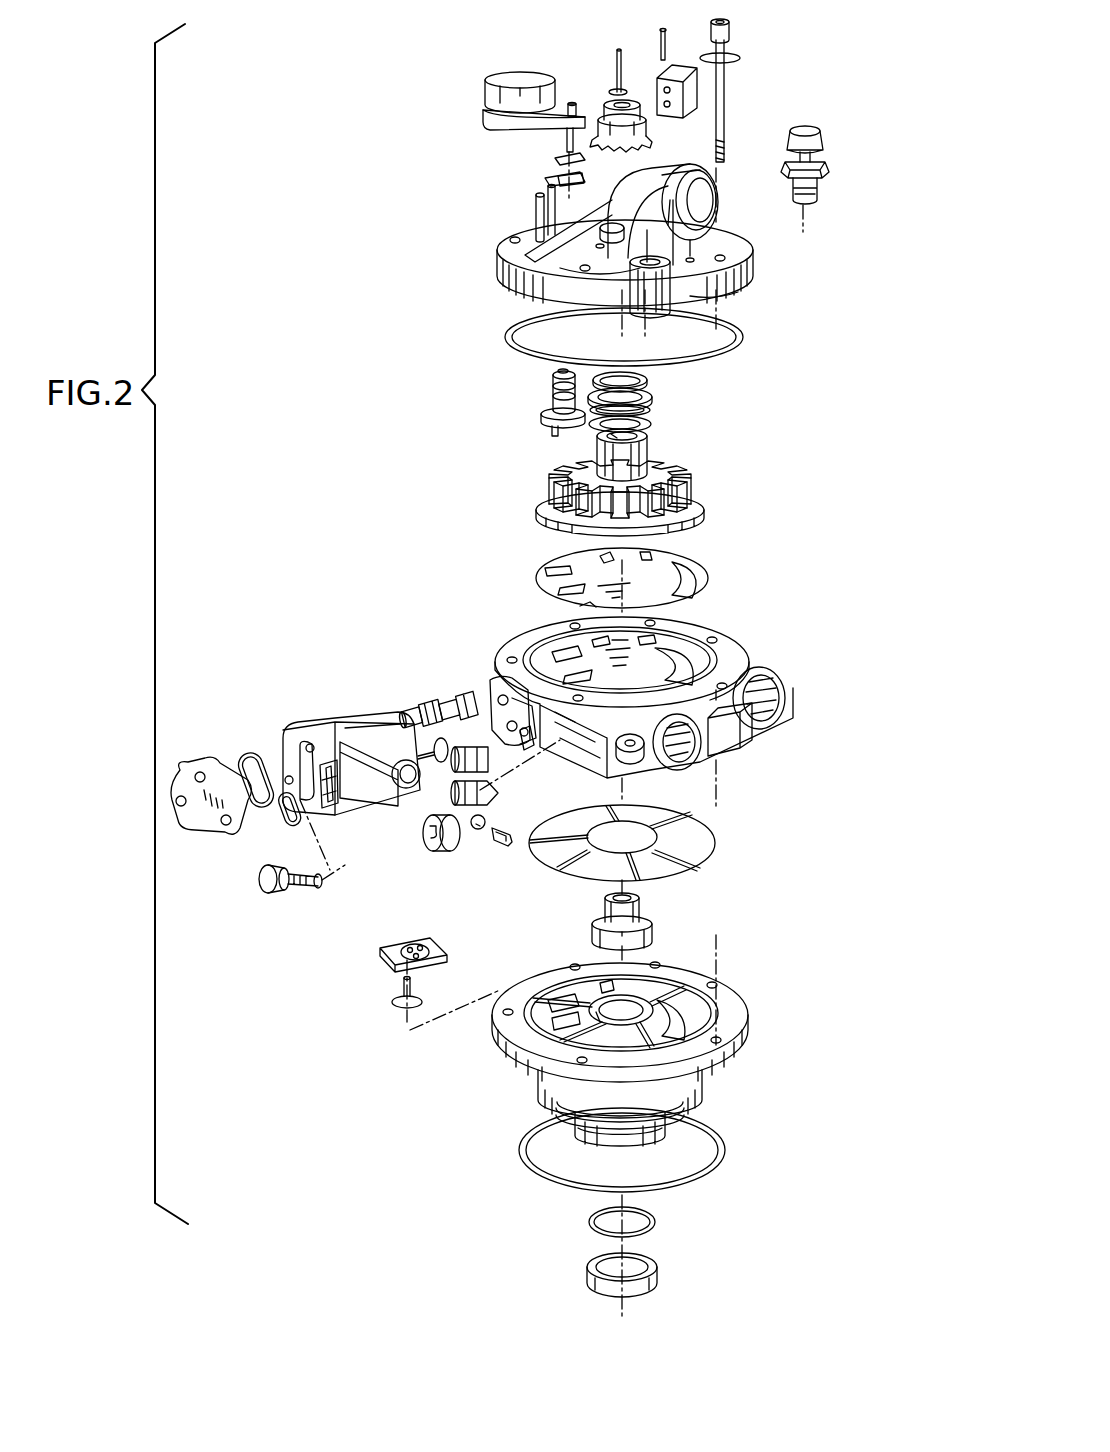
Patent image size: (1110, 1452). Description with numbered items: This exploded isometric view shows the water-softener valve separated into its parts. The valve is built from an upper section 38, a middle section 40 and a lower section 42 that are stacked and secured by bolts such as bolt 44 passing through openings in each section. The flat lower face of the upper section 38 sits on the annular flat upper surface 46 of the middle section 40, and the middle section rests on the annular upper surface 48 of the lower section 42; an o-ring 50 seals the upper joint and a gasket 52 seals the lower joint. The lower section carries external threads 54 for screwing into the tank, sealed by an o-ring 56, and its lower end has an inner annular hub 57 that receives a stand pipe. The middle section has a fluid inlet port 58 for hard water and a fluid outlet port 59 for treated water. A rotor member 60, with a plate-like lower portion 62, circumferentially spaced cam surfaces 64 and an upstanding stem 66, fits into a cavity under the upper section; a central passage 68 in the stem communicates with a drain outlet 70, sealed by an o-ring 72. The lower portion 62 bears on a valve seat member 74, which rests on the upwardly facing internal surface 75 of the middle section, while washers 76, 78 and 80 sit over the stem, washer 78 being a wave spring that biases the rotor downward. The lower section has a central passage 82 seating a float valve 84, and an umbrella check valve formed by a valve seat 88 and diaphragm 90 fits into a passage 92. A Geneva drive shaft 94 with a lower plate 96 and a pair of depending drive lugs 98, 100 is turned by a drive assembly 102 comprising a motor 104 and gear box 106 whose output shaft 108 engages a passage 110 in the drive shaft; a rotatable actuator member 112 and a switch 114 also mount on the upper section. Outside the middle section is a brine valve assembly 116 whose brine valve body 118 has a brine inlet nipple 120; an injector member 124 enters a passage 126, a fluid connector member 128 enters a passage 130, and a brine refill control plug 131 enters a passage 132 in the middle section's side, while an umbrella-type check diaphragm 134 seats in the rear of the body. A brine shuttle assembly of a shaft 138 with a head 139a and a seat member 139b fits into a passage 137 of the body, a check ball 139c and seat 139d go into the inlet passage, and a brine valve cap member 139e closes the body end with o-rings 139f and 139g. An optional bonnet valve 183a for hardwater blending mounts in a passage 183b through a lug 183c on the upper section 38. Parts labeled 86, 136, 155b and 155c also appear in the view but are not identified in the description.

The upper section 38 is at (770, 266).
The middle section 40 is at (662, 694).
The lower section 42 is at (642, 1059).
The bolt 44 is at (730, 92).
The annular flat upper surface 46 is at (720, 655).
The annular upper surface 48 is at (726, 1002).
The o-ring 50 is at (745, 340).
The gasket 52 is at (718, 845).
The external threads 54 is at (703, 1085).
The o-ring 56 is at (726, 1148).
The inner annular hub 57 is at (577, 1118).
The fluid inlet port 58 is at (772, 720).
The fluid outlet port 59 is at (684, 756).
The rotor member 60 is at (636, 472).
The plate-like lower portion 62 is at (704, 516).
The cam surfaces 64 is at (686, 481).
The stem 66 is at (600, 462).
The central passage 68 is at (596, 442).
The drain outlet 70 is at (706, 206).
The o-ring 72 is at (652, 378).
The valve seat member 74 is at (706, 580).
The upwardly facing internal surface 75 is at (666, 652).
The washer 76 is at (660, 397).
The wave spring washer 78 is at (660, 410).
The washer 80 is at (660, 424).
The central passage 82 is at (610, 1010).
The float valve 84 is at (669, 919).
The bushing boss 86 is at (636, 906).
The valve seat 88 is at (420, 936).
The diaphragm 90 is at (420, 992).
The passage 92 is at (600, 1016).
The Geneva drive shaft 94 is at (540, 386).
The lower plate 96 is at (540, 410).
The drive lug 98 is at (540, 428).
The drive lug 100 is at (560, 434).
The drive assembly 102 is at (433, 85).
The motor 104 is at (517, 72).
The gear box 106 is at (490, 118).
The output shaft 108 is at (565, 140).
The passage 110 is at (560, 372).
The rotatable actuator member 112 is at (597, 84).
The switch 114 is at (678, 56).
The brine valve assembly 116 is at (366, 789).
The brine valve body 118 is at (330, 725).
The brine inlet nipple 120 is at (418, 790).
The injector member 124 is at (441, 702).
The passage 126 is at (492, 690).
The fluid connector member 128 is at (440, 716).
The passage 130 is at (530, 738).
The brine refill control plug 131 is at (482, 792).
The passage 132 is at (520, 746).
The umbrella-type check diaphragm 134 is at (434, 745).
The mounting bracket 136 is at (497, 690).
The passage 137 is at (338, 770).
The shaft 138 is at (300, 890).
The head 139a is at (265, 884).
The seat member 139b is at (437, 853).
The ball 139c is at (478, 831).
The seat 139d is at (506, 846).
The brine valve cap member 139e is at (193, 836).
The o-ring 139f is at (250, 760).
The o-ring 139g is at (288, 824).
The pin 155b is at (328, 780).
The pin 155c is at (327, 788).
The bonnet valve 183a is at (826, 166).
The passage 183b is at (640, 262).
The lug 183c is at (738, 292).